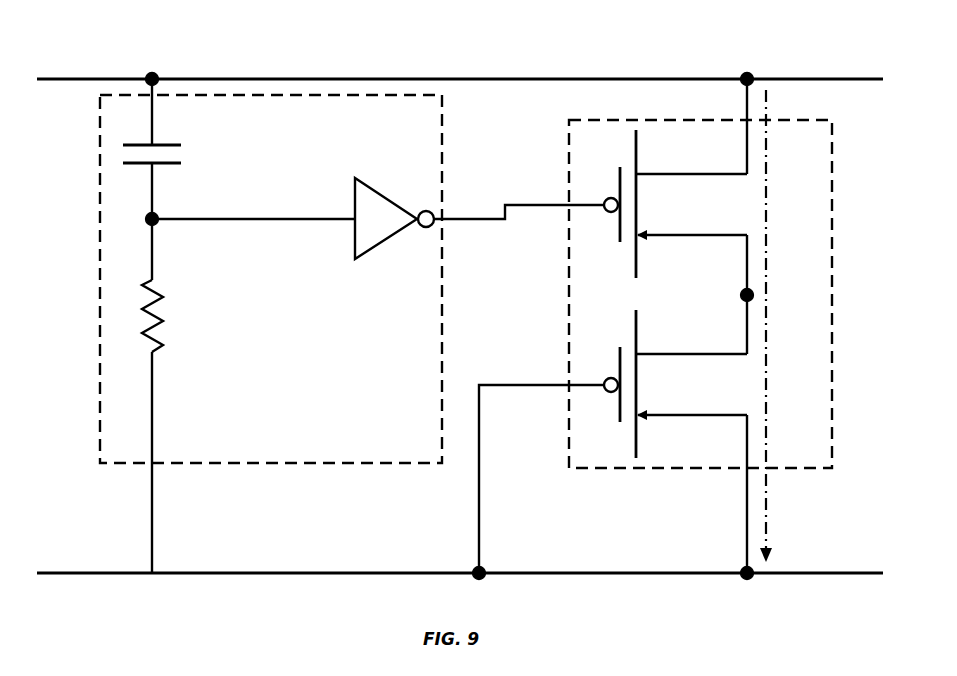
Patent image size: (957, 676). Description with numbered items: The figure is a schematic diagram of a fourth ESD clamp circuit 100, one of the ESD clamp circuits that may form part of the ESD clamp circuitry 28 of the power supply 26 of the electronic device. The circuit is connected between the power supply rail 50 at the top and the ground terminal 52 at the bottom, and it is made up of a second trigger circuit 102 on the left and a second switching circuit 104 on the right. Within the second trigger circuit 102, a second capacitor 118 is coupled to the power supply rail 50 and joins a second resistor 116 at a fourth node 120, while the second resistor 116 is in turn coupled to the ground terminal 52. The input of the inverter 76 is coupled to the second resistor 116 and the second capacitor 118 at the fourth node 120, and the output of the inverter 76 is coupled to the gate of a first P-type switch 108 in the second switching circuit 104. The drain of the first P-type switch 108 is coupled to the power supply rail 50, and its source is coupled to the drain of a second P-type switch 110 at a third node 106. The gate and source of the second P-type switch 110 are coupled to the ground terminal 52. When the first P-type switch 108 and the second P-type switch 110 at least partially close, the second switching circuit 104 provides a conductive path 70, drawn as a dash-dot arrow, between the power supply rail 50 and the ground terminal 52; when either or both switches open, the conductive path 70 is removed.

The power supply 26 is at (102, 55).
The ESD clamp circuitry 28 is at (102, 55).
The fourth ESD clamp circuit 100 is at (144, 70).
The power supply rail 50 is at (452, 78).
The ground terminal 52 is at (600, 572).
The conductive path 70 is at (770, 284).
The inverter 76 is at (390, 200).
The second trigger circuit 102 is at (98, 298).
The second switching circuit 104 is at (834, 302).
The third node 106 is at (744, 295).
The first P-type switch 108 is at (634, 152).
The second P-type switch 110 is at (634, 332).
The second resistor 116 is at (165, 319).
The second capacitor 118 is at (136, 143).
The fourth node 120 is at (160, 216).